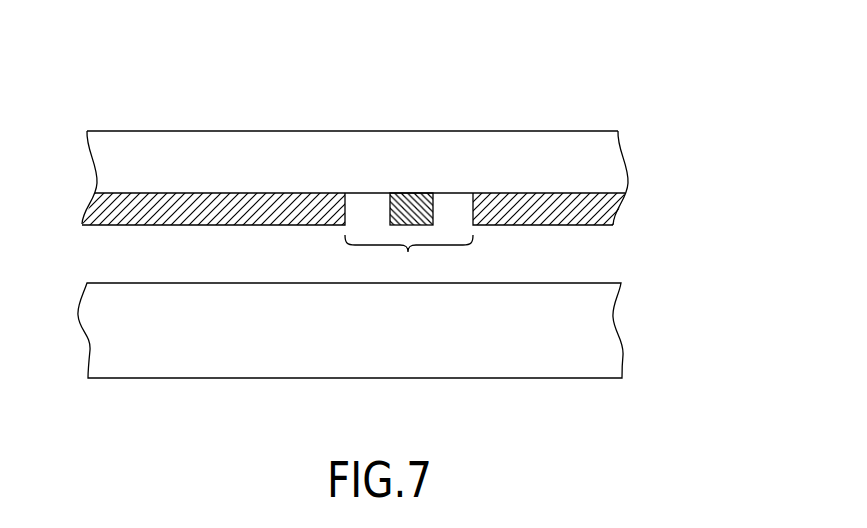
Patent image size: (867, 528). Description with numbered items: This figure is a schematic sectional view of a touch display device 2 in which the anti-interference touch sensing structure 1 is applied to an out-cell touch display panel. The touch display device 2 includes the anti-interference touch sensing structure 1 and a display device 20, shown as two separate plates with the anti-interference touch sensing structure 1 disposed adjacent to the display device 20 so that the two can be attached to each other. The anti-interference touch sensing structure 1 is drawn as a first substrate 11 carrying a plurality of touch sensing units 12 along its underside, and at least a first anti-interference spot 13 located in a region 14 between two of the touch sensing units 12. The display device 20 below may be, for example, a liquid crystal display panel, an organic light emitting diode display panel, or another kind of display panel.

The anti-interference touch sensing structure 1 is at (381, 172).
The touch display device 2 is at (376, 206).
The first substrate 11 is at (597, 166).
The touch sensing units 12 is at (163, 210).
The first anti-interference spot 13 is at (412, 199).
The gap region 14 is at (409, 257).
The display device 20 is at (602, 328).